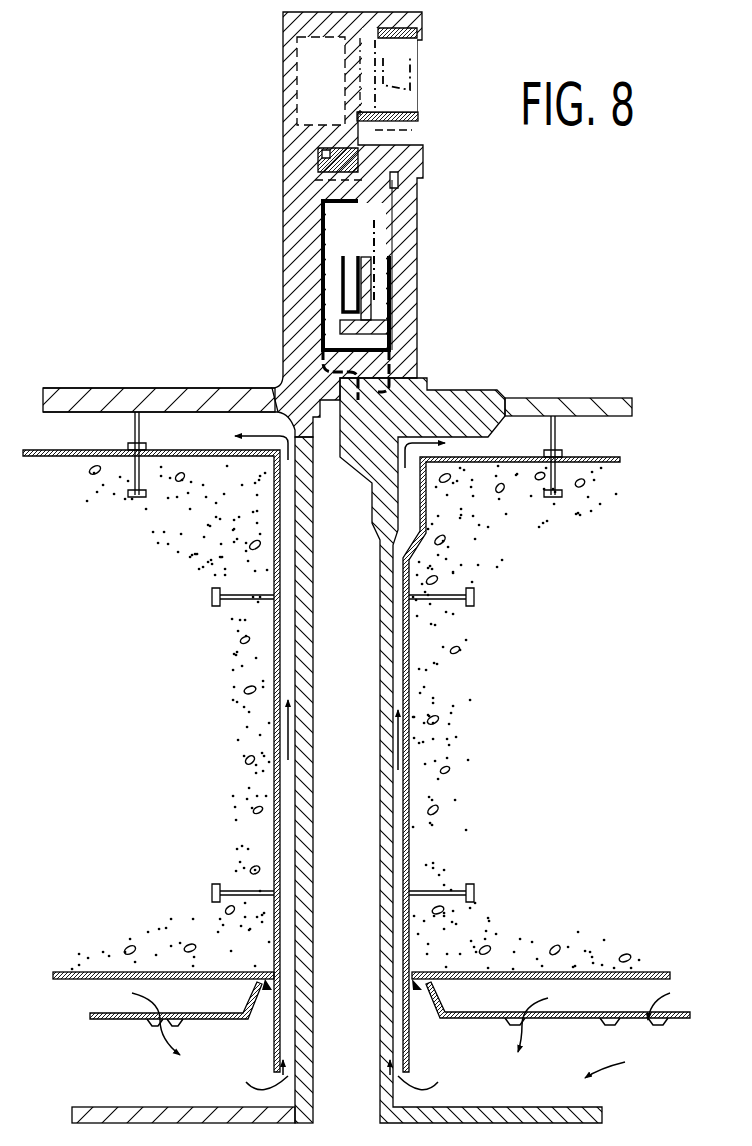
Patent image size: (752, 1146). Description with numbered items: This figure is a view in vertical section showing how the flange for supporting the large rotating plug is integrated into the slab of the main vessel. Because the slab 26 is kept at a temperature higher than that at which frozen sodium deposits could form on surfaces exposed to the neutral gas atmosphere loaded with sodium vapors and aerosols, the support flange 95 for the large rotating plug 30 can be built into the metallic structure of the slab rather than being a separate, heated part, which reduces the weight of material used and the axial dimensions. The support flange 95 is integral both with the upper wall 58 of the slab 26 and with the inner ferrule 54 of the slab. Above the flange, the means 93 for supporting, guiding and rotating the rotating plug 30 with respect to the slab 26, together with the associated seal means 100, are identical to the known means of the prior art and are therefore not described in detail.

The slab 26 is at (508, 384).
The large rotating plug 30 is at (163, 387).
The inner ferrule 54 is at (385, 712).
The upper wall 58 is at (555, 401).
The means for supporting, guiding and rotating the rotating plug 93 is at (280, 93).
The support flange 95 is at (433, 413).
The seal means 100 is at (326, 247).